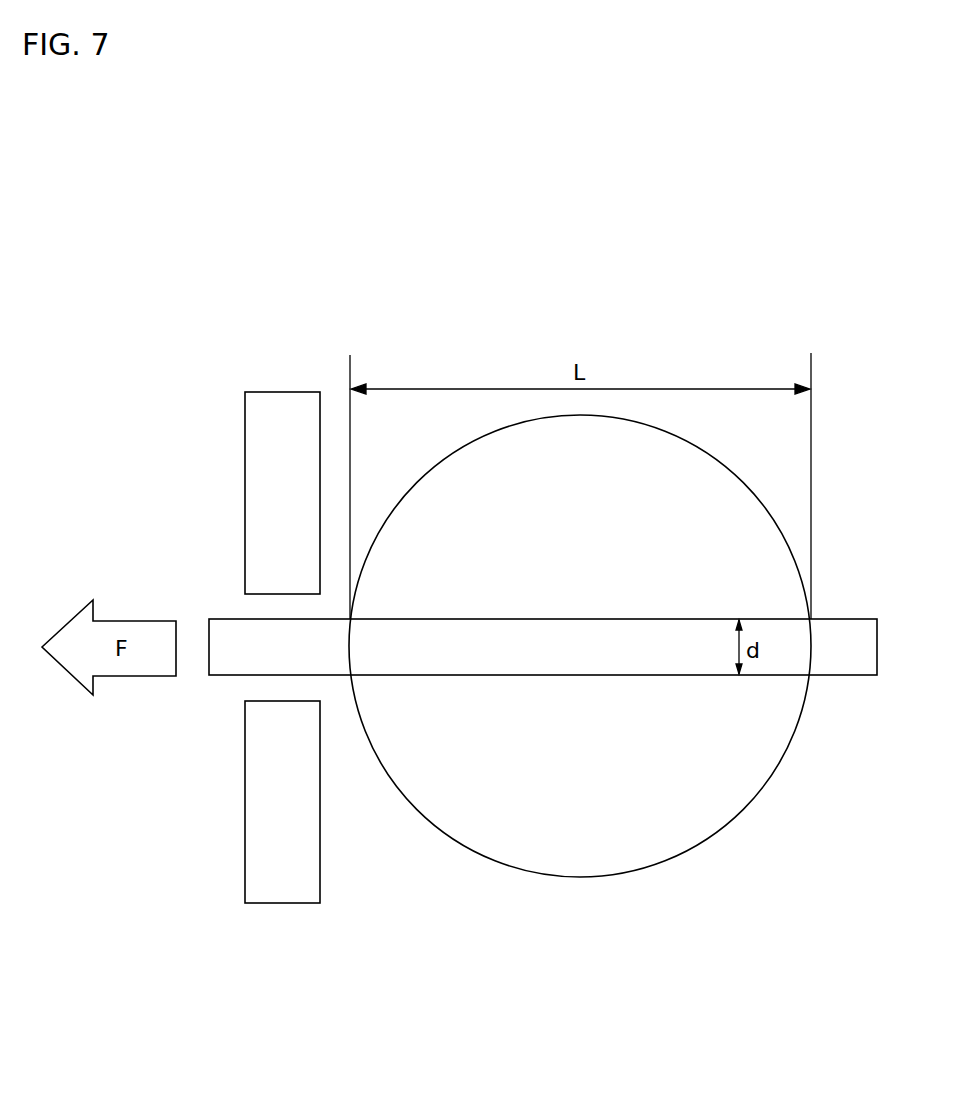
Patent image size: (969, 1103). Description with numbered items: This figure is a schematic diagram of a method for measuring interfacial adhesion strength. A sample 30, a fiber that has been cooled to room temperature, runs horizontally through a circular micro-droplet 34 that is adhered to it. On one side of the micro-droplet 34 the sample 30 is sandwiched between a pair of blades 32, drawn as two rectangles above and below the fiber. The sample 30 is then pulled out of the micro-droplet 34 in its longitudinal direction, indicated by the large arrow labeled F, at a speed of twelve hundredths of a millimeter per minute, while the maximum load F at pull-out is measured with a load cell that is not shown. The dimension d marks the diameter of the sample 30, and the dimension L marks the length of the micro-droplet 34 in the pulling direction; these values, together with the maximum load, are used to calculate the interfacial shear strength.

The sample 30 is at (853, 619).
The blades 32 is at (278, 392).
The micro-droplet 34 is at (732, 823).